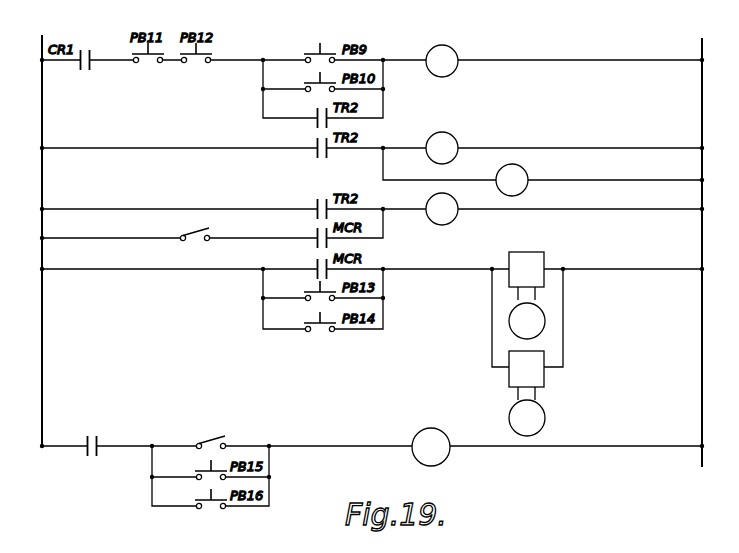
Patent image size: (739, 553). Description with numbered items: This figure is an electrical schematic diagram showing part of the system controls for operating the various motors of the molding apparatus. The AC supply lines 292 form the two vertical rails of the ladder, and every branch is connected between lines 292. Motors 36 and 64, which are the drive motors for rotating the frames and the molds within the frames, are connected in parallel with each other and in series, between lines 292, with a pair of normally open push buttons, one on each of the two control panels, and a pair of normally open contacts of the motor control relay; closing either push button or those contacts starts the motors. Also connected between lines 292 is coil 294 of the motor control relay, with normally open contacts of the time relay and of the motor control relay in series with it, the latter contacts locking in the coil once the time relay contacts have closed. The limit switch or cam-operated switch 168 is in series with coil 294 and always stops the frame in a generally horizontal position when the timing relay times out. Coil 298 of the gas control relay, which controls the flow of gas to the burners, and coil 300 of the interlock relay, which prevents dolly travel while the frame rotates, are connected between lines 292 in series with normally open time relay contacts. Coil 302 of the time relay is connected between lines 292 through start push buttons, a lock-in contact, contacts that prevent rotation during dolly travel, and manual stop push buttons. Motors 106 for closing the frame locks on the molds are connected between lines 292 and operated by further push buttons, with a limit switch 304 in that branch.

The AC supply lines 292 is at (42, 456).
The coil of time relay TR2 302 is at (454, 50).
The coil of gas control relay GCR 298 is at (454, 137).
The coil of interlock relay IR 300 is at (524, 169).
The coil of motor control relay MCR 294 is at (449, 224).
The cam-operated switch 168 is at (200, 233).
The limit switch MS6 304 is at (210, 440).
The motor 36 is at (545, 321).
The motor 64 is at (545, 419).
The motor 106 is at (446, 428).